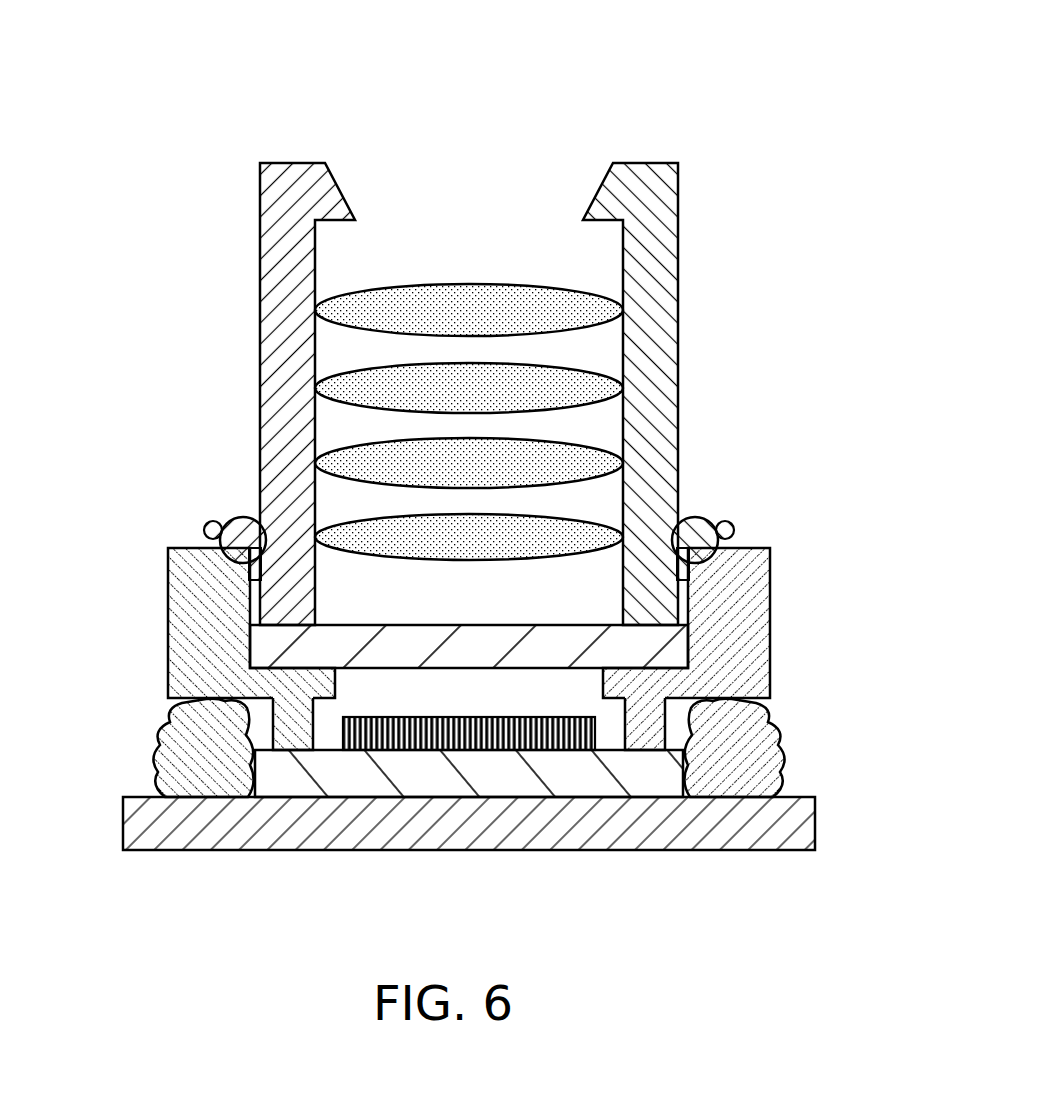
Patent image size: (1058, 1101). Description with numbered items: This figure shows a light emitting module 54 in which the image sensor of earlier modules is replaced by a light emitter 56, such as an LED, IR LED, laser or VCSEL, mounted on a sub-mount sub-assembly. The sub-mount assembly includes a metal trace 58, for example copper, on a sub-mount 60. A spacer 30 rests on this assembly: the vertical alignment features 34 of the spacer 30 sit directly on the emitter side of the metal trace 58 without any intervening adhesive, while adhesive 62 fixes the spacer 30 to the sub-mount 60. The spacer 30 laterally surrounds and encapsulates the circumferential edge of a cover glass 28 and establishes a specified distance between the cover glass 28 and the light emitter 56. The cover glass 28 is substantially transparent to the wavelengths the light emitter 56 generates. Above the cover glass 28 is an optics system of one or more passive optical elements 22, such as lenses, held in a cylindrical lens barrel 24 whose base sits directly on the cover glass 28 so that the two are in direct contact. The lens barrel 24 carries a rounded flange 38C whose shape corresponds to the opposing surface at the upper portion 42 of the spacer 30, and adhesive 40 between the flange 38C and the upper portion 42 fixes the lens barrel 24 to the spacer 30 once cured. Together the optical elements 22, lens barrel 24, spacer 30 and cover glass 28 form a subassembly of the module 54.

The light emitting module 54 is at (606, 114).
The passive optical elements 22 is at (502, 365).
The lens barrel 24 is at (265, 263).
The cover glass 28 is at (413, 638).
The spacer 30 is at (173, 673).
The vertical alignment features 34 is at (317, 713).
The flange 38C is at (247, 525).
The adhesive 40 is at (213, 527).
The upper portion of the spacer 42 is at (223, 553).
The light emitter 56 is at (472, 733).
The metal trace 58 is at (600, 788).
The sub-mount 60 is at (733, 835).
The adhesive 62 is at (150, 764).